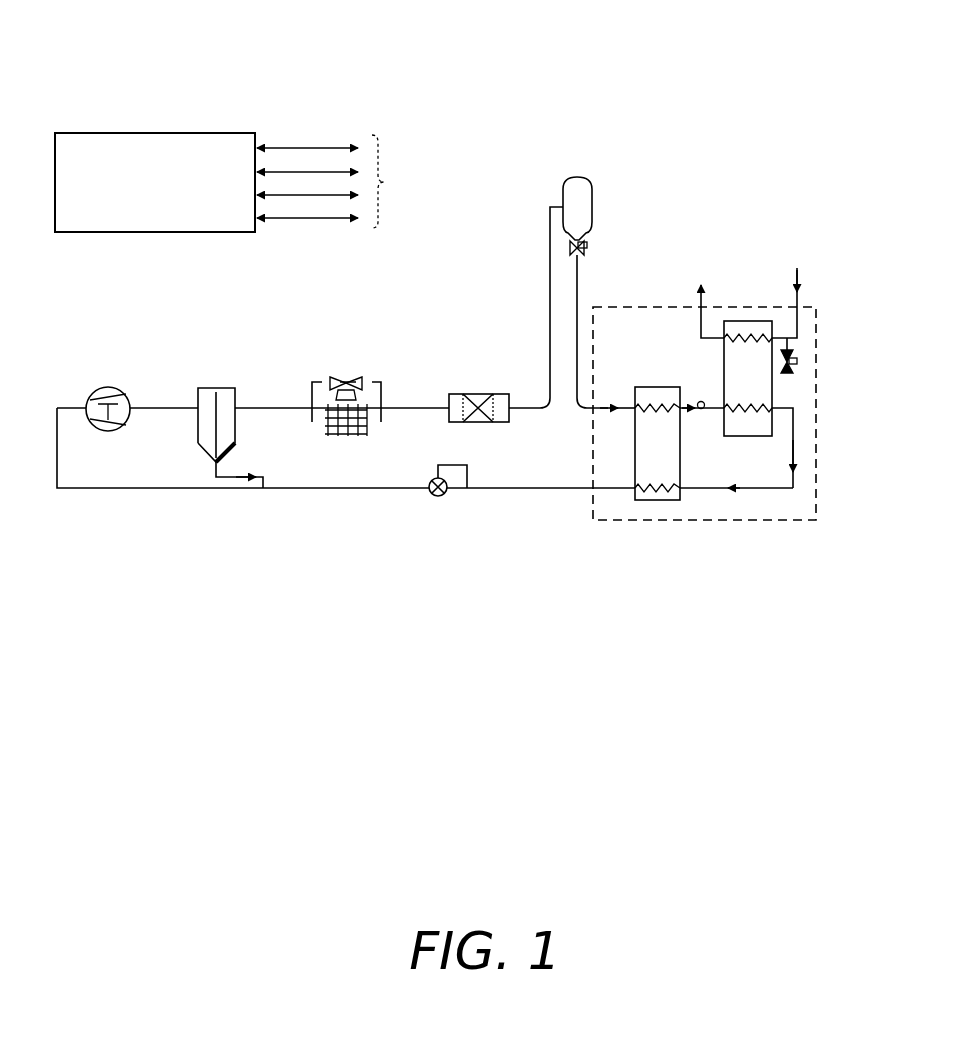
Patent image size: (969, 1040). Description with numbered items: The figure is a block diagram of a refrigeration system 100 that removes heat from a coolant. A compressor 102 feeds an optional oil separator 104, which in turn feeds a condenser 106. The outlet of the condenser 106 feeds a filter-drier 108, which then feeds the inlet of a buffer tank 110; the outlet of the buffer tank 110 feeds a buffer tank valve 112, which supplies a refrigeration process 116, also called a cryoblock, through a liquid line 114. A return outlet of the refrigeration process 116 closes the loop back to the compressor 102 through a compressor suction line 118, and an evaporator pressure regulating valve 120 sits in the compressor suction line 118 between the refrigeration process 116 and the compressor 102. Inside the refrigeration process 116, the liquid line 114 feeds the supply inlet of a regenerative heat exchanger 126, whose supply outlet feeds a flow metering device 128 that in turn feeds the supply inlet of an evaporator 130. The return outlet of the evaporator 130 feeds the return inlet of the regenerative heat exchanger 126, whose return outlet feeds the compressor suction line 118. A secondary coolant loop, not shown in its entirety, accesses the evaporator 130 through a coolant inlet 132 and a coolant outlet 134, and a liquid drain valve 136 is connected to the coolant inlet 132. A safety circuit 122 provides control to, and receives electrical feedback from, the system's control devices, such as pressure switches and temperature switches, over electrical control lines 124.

The refrigeration system 100 is at (784, 77).
The compressor 102 is at (110, 392).
The oil separator 104 is at (222, 388).
The condenser 106 is at (346, 380).
The filter-drier 108 is at (460, 394).
The buffer tank 110 is at (587, 177).
The buffer tank valve 112 is at (586, 245).
The liquid line 114 is at (583, 408).
The refrigeration process 116 is at (652, 530).
The compressor suction line 118 is at (190, 489).
The evaporator pressure regulating (EPR) valve 120 is at (436, 497).
The safety circuit 122 is at (155, 182).
The control lines 124 is at (378, 181).
The regenerative heat exchanger 126 is at (648, 496).
The flow metering device (FMD) 128 is at (700, 401).
The evaporator 130 is at (767, 422).
The coolant inlet 132 is at (797, 268).
The coolant outlet 134 is at (702, 270).
The liquid drain valve 136 is at (797, 361).